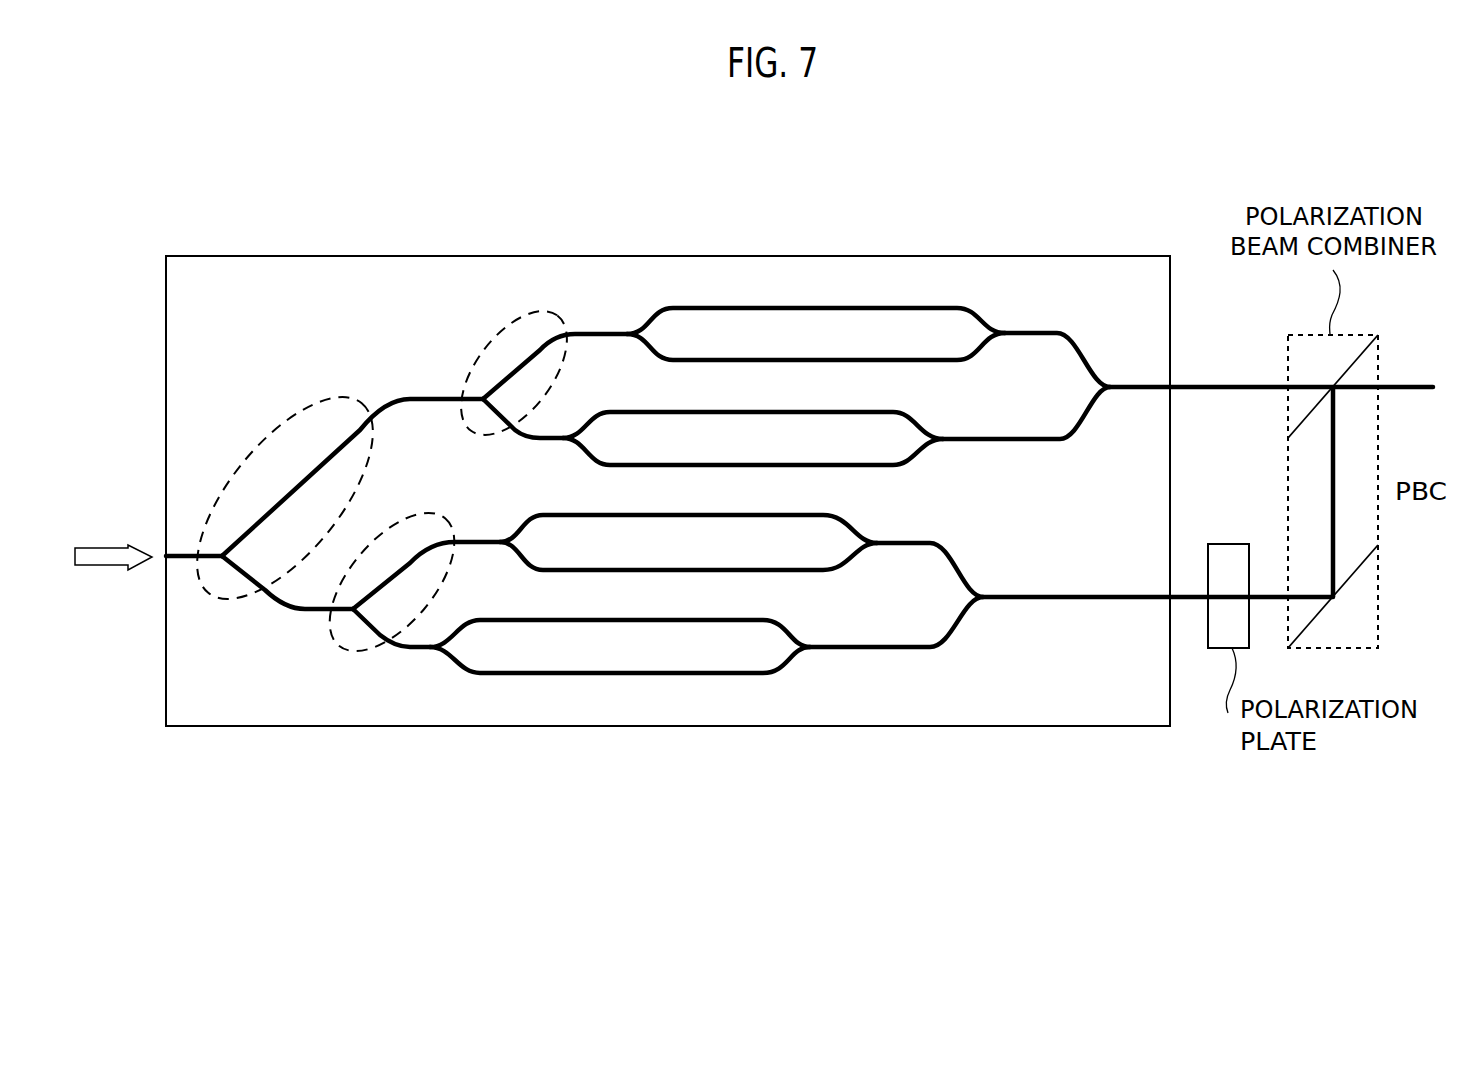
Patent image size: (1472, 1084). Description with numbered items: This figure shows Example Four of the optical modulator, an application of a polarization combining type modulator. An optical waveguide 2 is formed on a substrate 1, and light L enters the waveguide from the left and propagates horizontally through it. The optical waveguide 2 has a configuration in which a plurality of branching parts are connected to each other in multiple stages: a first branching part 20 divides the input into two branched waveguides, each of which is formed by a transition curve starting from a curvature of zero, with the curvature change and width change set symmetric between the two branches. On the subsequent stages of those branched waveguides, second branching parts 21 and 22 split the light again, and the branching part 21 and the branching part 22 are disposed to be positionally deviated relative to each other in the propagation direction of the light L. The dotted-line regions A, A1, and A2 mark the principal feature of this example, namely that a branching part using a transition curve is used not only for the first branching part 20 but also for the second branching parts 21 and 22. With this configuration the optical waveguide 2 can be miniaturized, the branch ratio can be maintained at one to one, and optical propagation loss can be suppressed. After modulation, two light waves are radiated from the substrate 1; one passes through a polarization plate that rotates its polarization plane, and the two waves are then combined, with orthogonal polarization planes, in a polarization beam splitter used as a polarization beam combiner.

The substrate 1 is at (962, 726).
The optical waveguide 2 is at (910, 300).
The first branching part 20 is at (223, 550).
The second branching part 21 is at (353, 609).
The second branching part 22 is at (487, 390).
The branching part region using a transition curve A is at (240, 600).
The branching part region using a transition curve A1 is at (377, 650).
The branching part region using a transition curve A2 is at (553, 313).
The light L is at (113, 529).